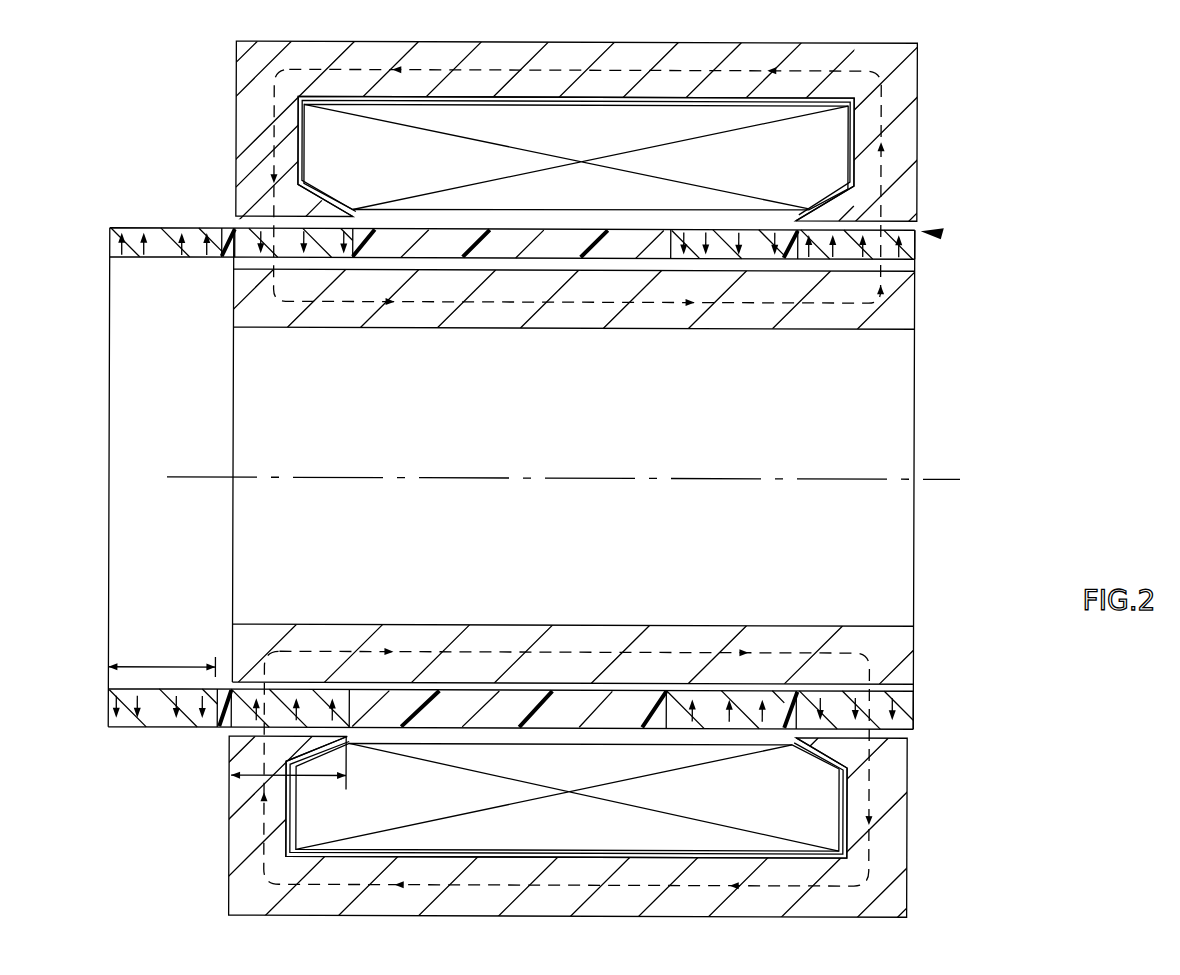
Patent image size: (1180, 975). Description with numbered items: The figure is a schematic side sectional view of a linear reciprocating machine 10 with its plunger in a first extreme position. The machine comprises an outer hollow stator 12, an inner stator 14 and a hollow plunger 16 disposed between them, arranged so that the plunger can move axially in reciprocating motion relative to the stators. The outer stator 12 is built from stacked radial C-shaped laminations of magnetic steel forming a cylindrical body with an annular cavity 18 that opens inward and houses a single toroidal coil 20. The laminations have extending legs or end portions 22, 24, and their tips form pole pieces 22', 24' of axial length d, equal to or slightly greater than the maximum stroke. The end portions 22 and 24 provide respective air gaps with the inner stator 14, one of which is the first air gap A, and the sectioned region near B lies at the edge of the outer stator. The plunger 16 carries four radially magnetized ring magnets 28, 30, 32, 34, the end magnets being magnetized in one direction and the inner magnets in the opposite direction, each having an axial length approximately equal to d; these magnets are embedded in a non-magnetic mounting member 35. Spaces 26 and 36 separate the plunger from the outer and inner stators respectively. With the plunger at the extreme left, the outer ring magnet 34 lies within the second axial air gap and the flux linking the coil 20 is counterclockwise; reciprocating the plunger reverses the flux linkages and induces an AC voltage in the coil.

The linear reciprocating machine 10 is at (970, 155).
The outer hollow stator 12 is at (617, 58).
The inner stator 14 is at (910, 317).
The hollow plunger 16 is at (916, 246).
The annular cavity 18 is at (300, 110).
The toroidal coil 20 is at (378, 127).
The end portion 22 is at (255, 141).
The pole piece 22' is at (247, 193).
The end portion 24 is at (904, 143).
The pole piece 24' is at (909, 197).
The space 26 is at (943, 234).
The ring magnet 28 is at (158, 248).
The ring magnet 30 is at (327, 245).
The ring magnet 32 is at (758, 252).
The ring magnet 34 is at (844, 252).
The mounting member 35 is at (463, 244).
The space 36 is at (594, 253).
The first air gap A is at (228, 222).
The flux direction B is at (943, 237).